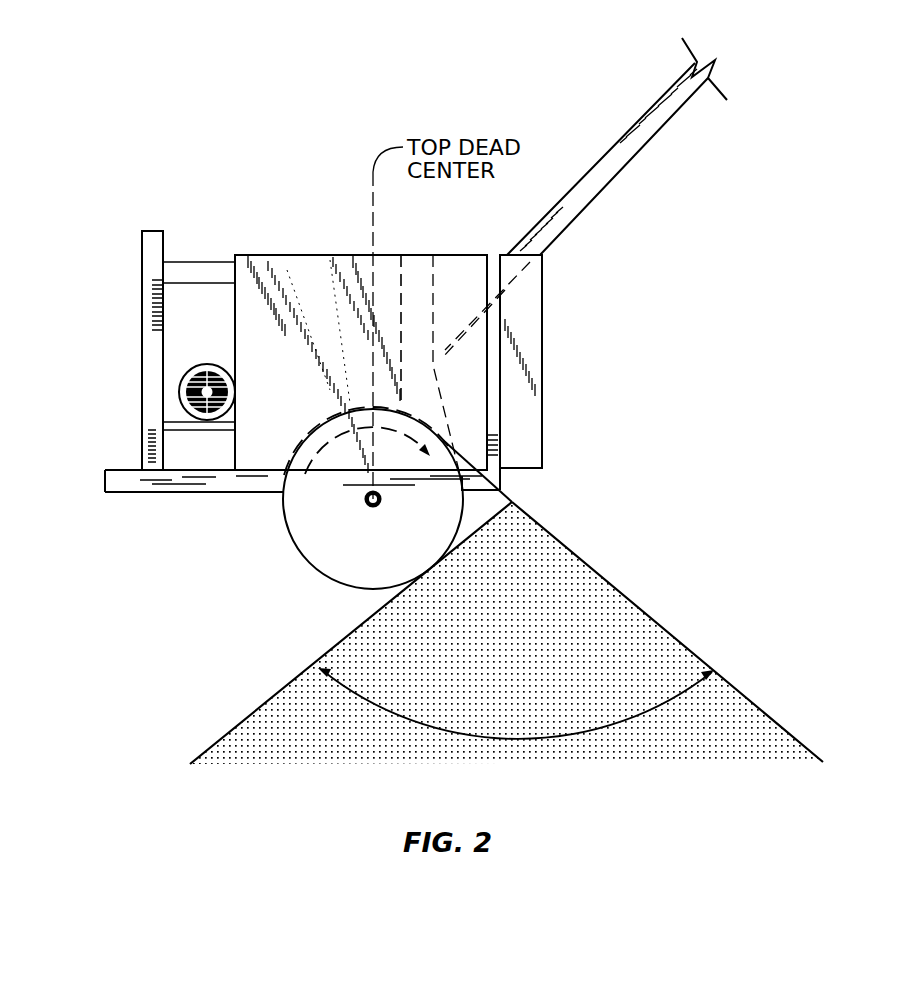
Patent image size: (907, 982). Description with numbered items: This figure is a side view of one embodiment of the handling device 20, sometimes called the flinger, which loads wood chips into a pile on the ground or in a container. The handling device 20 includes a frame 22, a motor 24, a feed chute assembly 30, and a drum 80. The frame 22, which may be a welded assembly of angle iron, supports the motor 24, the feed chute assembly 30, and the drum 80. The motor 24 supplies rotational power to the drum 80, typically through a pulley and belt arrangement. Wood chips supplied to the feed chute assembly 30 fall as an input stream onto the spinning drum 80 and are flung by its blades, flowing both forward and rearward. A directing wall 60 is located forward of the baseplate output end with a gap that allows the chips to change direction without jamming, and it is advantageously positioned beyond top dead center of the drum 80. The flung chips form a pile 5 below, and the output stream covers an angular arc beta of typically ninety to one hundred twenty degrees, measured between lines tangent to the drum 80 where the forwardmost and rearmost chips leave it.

The handling device 20 is at (428, 68).
The frame 22 is at (150, 388).
The motor 24 is at (204, 365).
The feed chute assembly 30 is at (603, 174).
The directing wall 60 is at (413, 277).
The drum 80 is at (258, 540).
The pile of discharged material 5 is at (635, 623).